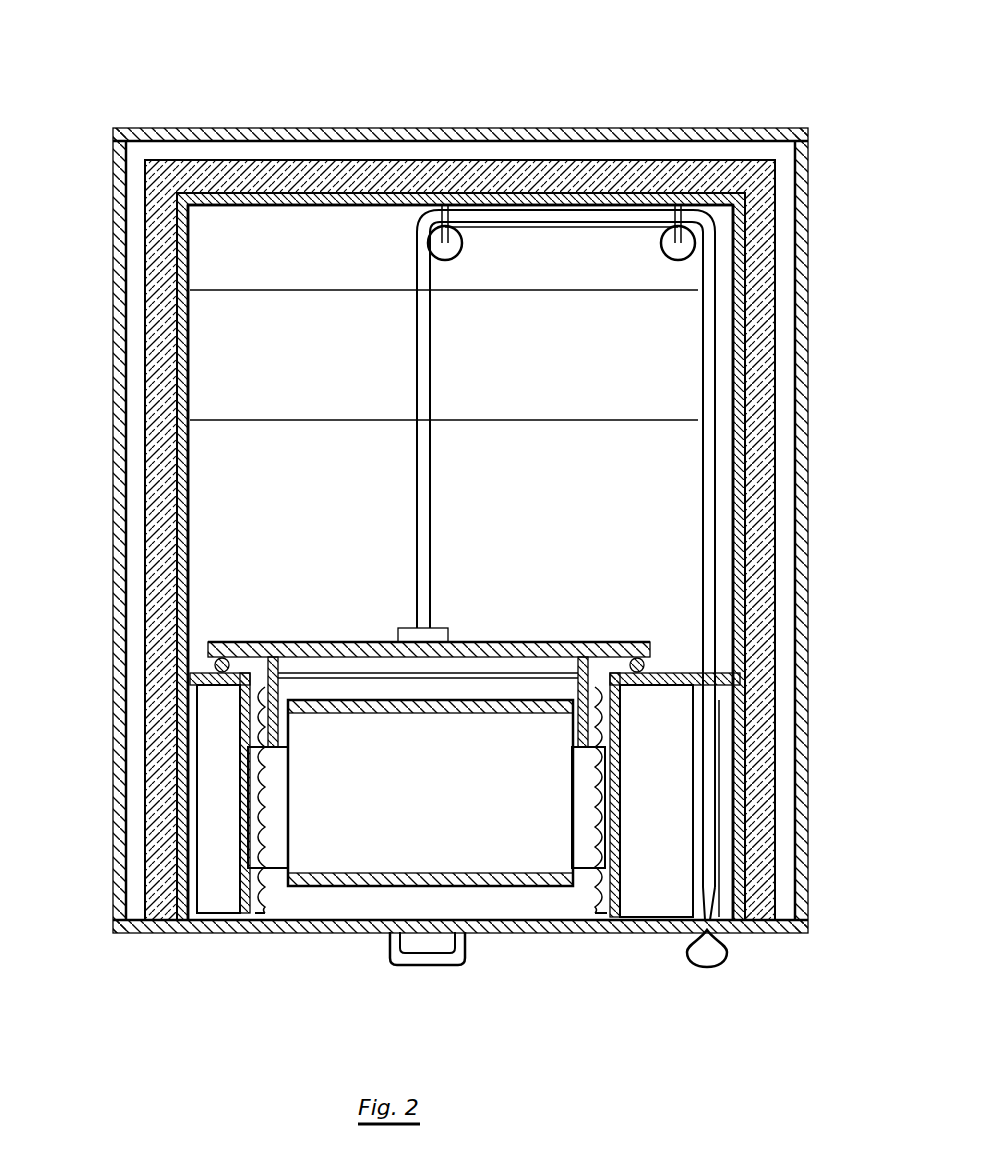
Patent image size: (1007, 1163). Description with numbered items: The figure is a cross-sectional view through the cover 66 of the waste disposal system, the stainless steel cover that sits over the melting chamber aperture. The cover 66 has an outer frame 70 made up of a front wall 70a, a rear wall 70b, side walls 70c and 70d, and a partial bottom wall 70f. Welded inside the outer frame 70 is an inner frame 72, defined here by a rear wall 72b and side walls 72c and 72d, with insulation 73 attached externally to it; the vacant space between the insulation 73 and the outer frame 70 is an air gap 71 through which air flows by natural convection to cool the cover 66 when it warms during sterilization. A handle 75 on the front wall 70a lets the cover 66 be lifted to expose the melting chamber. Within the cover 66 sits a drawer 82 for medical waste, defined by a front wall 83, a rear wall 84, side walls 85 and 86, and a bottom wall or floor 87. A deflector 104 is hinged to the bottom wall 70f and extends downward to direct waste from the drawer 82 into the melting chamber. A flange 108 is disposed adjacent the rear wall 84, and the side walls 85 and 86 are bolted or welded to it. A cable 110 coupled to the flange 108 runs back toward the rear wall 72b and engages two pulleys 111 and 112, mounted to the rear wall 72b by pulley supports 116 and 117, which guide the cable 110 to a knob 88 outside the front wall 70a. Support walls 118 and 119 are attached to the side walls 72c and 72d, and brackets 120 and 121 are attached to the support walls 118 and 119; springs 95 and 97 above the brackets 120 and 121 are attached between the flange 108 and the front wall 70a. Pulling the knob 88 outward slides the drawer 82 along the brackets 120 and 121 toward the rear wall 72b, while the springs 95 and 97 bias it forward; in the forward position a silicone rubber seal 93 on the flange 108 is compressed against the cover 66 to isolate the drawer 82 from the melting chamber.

The cover 66 is at (290, 93).
The outer frame 70 is at (812, 342).
The front wall 70a is at (533, 932).
The rear wall 70b is at (592, 128).
The side wall 70c is at (117, 607).
The side wall 70d is at (810, 583).
The partial bottom wall 70f is at (682, 812).
The air gap 71 is at (443, 146).
The inner frame 72 is at (192, 535).
The rear wall 72b is at (232, 210).
The side wall 72c is at (190, 462).
The side wall 72d is at (735, 513).
The insulation 73 is at (773, 467).
The handle 75 is at (423, 965).
The drawer 82 is at (337, 858).
The front wall 83 is at (413, 872).
The rear wall 84 is at (403, 713).
The side wall 85 is at (287, 743).
The side wall 86 is at (582, 740).
The bottom wall 87 is at (410, 803).
The knob 88 is at (707, 967).
The seal 93 is at (640, 659).
The spring 95 is at (262, 830).
The spring 97 is at (593, 800).
The deflector 104 is at (588, 355).
The flange 108 is at (520, 642).
The cable 110 is at (430, 487).
The pulley 111 is at (460, 253).
The pulley 112 is at (665, 257).
The pulley support 116 is at (437, 208).
The pulley support 117 is at (667, 208).
The support wall 118 is at (240, 780).
The support wall 119 is at (622, 740).
The bracket 120 is at (292, 793).
The bracket 121 is at (572, 845).